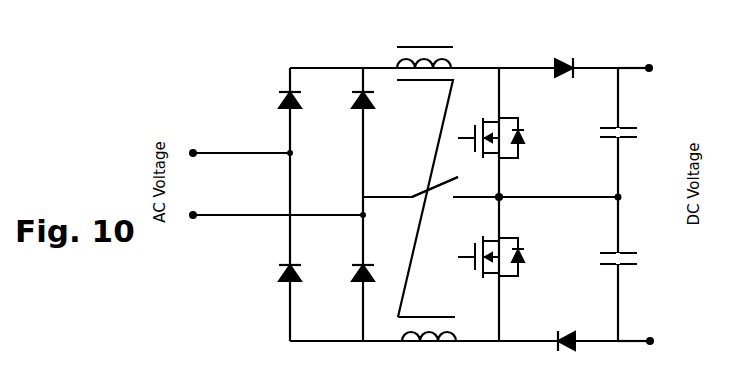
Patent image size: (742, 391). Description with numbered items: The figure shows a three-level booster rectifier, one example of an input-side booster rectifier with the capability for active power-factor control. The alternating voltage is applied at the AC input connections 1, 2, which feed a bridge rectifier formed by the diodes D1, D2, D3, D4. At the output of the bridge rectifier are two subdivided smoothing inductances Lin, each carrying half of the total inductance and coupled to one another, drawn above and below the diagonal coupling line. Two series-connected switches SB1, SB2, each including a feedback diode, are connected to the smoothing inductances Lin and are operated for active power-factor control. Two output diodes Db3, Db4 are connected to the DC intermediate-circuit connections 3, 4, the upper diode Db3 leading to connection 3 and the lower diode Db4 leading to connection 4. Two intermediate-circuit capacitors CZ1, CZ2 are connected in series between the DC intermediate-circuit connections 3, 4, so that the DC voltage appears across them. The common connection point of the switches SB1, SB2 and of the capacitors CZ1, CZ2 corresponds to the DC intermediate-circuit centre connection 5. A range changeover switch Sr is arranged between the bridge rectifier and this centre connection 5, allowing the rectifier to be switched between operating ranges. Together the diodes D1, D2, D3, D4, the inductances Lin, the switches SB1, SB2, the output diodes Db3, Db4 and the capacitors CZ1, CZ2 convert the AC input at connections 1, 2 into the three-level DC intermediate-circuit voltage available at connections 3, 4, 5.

The AC input connection 1 is at (241, 143).
The AC input connection 2 is at (277, 204).
The DC intermediate-circuit connection 3 is at (645, 55).
The DC intermediate-circuit connection 4 is at (646, 343).
The DC intermediate-circuit centre connection 5 is at (569, 187).
The diode in the rectifier D1 is at (270, 104).
The diode in the rectifier D2 is at (345, 104).
The diode in the rectifier D3 is at (270, 278).
The diode in the rectifier D4 is at (345, 278).
The output diode of the rectifier Db3 is at (552, 50).
The output diode of the rectifier Db4 is at (582, 361).
The smoothing inductance in the rectifier Lin is at (432, 206).
The range changeover switch for the rectifier Sr is at (423, 182).
The switch in the rectifier, including feedback diode SB1 is at (512, 138).
The switch in the rectifier, including feedback diode SB2 is at (512, 251).
The intermediate-circuit capacitor CZ1 is at (635, 116).
The intermediate-circuit capacitor CZ2 is at (635, 243).